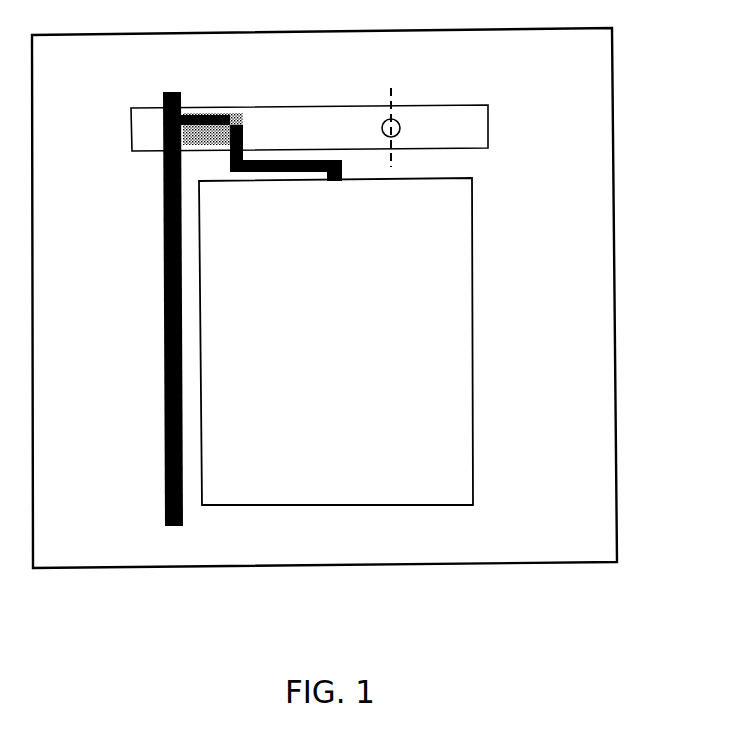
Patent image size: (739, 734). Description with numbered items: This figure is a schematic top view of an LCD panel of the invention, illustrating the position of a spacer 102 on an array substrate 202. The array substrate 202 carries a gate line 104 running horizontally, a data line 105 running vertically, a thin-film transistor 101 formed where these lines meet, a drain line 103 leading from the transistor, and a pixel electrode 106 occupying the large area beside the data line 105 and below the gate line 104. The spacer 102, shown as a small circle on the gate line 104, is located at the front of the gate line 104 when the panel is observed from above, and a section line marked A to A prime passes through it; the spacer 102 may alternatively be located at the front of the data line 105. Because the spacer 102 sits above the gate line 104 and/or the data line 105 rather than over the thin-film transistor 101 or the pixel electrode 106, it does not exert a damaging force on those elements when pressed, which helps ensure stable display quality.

The thin-film transistor 101 is at (242, 110).
The spacer 102 is at (384, 121).
The drain line 103 is at (315, 158).
The gate line 104 is at (488, 125).
The data line 105 is at (164, 254).
The pixel electrode 106 is at (472, 312).
The array substrate 202 is at (613, 180).